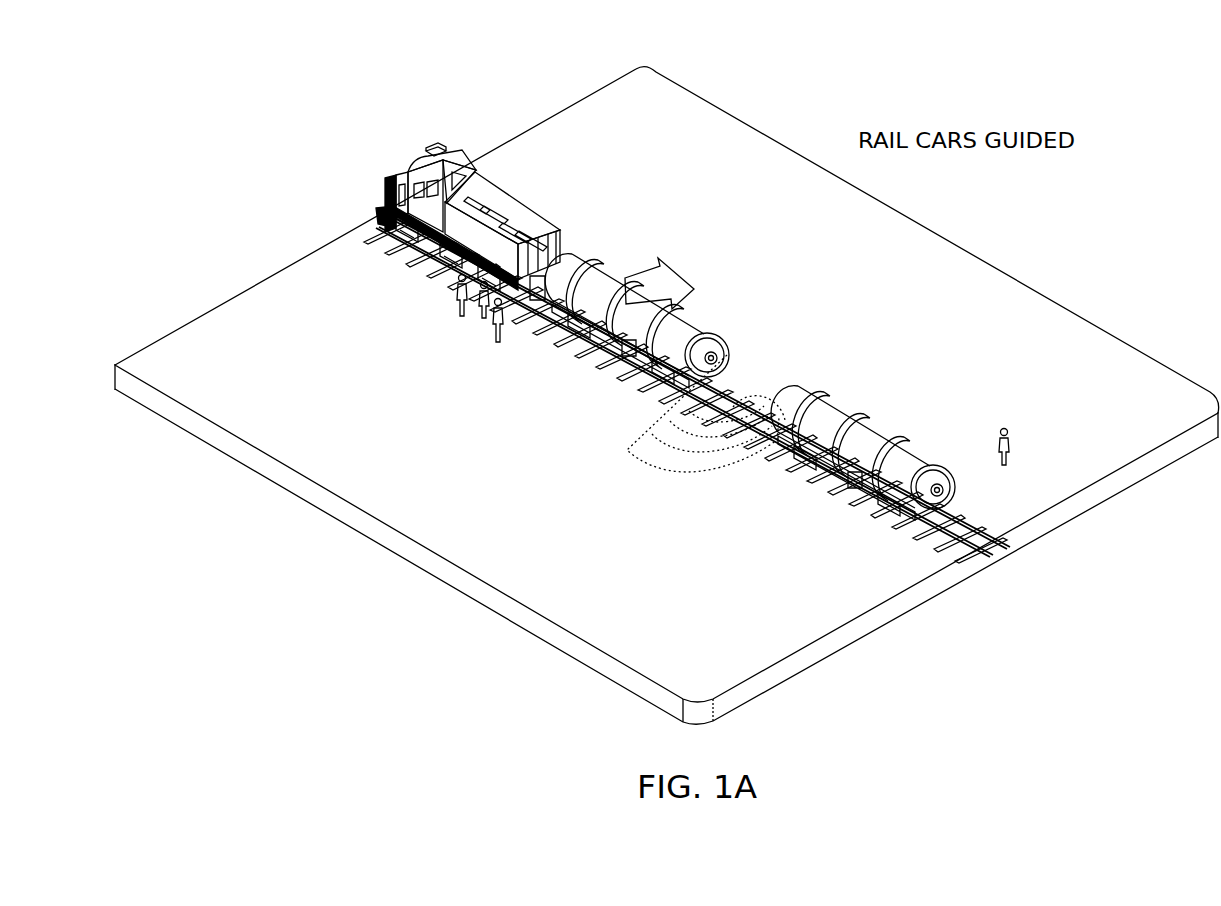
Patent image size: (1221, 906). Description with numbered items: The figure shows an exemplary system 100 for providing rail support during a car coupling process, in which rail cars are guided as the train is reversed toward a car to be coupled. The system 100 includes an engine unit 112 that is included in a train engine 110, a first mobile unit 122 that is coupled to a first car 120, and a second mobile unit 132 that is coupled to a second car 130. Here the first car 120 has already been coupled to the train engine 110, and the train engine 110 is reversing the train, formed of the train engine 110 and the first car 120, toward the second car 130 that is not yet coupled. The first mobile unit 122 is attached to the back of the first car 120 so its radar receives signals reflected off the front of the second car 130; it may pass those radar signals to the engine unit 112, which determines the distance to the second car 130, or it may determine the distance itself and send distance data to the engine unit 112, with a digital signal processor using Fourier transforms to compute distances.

The system 100 is at (260, 48).
The train engine 110 is at (468, 196).
The engine unit 112 is at (438, 148).
The first car 120 is at (648, 296).
The first mobile unit 122 is at (715, 352).
The second car 130 is at (876, 430).
The second mobile unit 132 is at (941, 486).